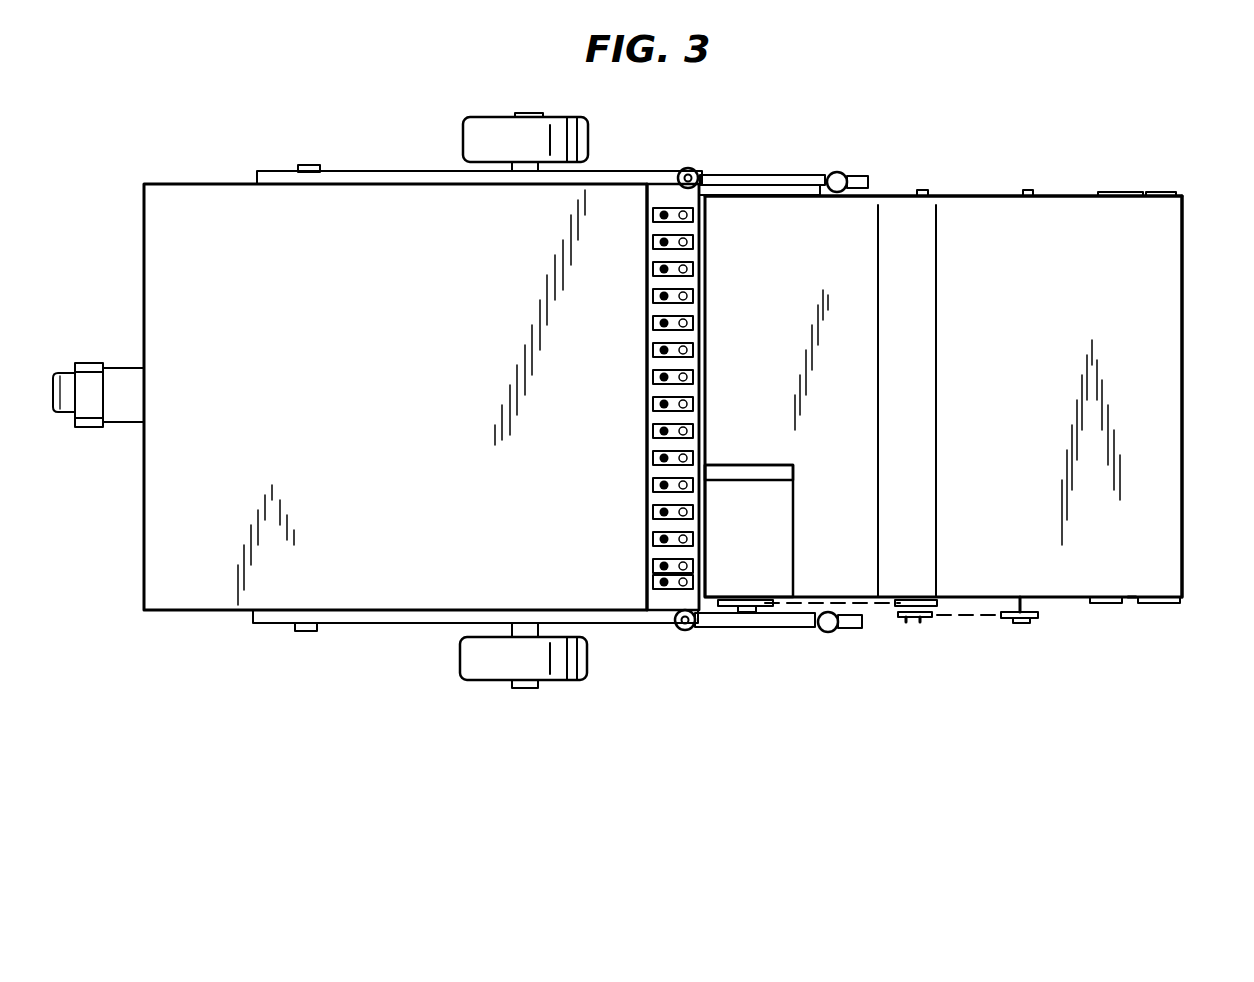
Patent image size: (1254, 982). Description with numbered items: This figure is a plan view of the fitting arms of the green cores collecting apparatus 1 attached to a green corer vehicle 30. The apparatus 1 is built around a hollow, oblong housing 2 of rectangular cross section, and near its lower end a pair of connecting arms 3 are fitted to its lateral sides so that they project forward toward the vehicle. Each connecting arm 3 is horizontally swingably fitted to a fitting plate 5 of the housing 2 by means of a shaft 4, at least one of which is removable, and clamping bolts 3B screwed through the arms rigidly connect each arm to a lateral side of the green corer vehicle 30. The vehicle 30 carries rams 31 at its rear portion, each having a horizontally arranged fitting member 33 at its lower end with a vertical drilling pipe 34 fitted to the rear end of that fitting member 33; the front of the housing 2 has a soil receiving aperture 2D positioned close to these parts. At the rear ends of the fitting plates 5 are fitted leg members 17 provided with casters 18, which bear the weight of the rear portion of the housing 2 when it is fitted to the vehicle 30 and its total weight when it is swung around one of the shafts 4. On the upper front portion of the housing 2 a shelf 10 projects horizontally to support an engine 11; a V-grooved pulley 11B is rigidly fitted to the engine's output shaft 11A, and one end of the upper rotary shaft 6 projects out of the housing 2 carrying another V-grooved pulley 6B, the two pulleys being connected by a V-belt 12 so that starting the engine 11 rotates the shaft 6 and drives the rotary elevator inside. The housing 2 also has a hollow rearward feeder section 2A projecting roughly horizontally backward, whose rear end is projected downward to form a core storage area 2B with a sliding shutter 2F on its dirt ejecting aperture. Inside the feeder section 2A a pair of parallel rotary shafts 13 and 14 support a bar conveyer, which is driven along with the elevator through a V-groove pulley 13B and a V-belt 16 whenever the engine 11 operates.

The green cores collecting apparatus 1 is at (1191, 254).
The housing 2 is at (741, 262).
The rearward feeder section 2A is at (1078, 252).
The core storage area 2B is at (1175, 362).
The soil receiving aperture 2D is at (683, 592).
The sliding shutter 2F is at (1165, 192).
The connecting arm 3 is at (396, 171).
The clamping bolt 3B is at (312, 165).
The shaft 4 is at (688, 168).
The fitting plate 5 is at (790, 175).
The upper rotary shaft 6 is at (922, 191).
The V-grooved pulley 6B is at (900, 622).
The shelf 10 is at (793, 478).
The engine 11 is at (793, 517).
The output shaft 11A is at (740, 608).
The V-grooved pulley 11B is at (765, 612).
The V-belt 12 is at (798, 608).
The rotary shaft 13 is at (1028, 190).
The V-groove pulley 13B is at (1035, 624).
The rotary shaft 14 is at (1138, 192).
The V-belt 16 is at (977, 618).
The leg member 17 is at (838, 172).
The caster 18 is at (866, 180).
The green corer vehicle 30 is at (148, 552).
The ram 31 is at (662, 210).
The fitting member 33 is at (658, 592).
The drilling pipe 34 is at (665, 592).